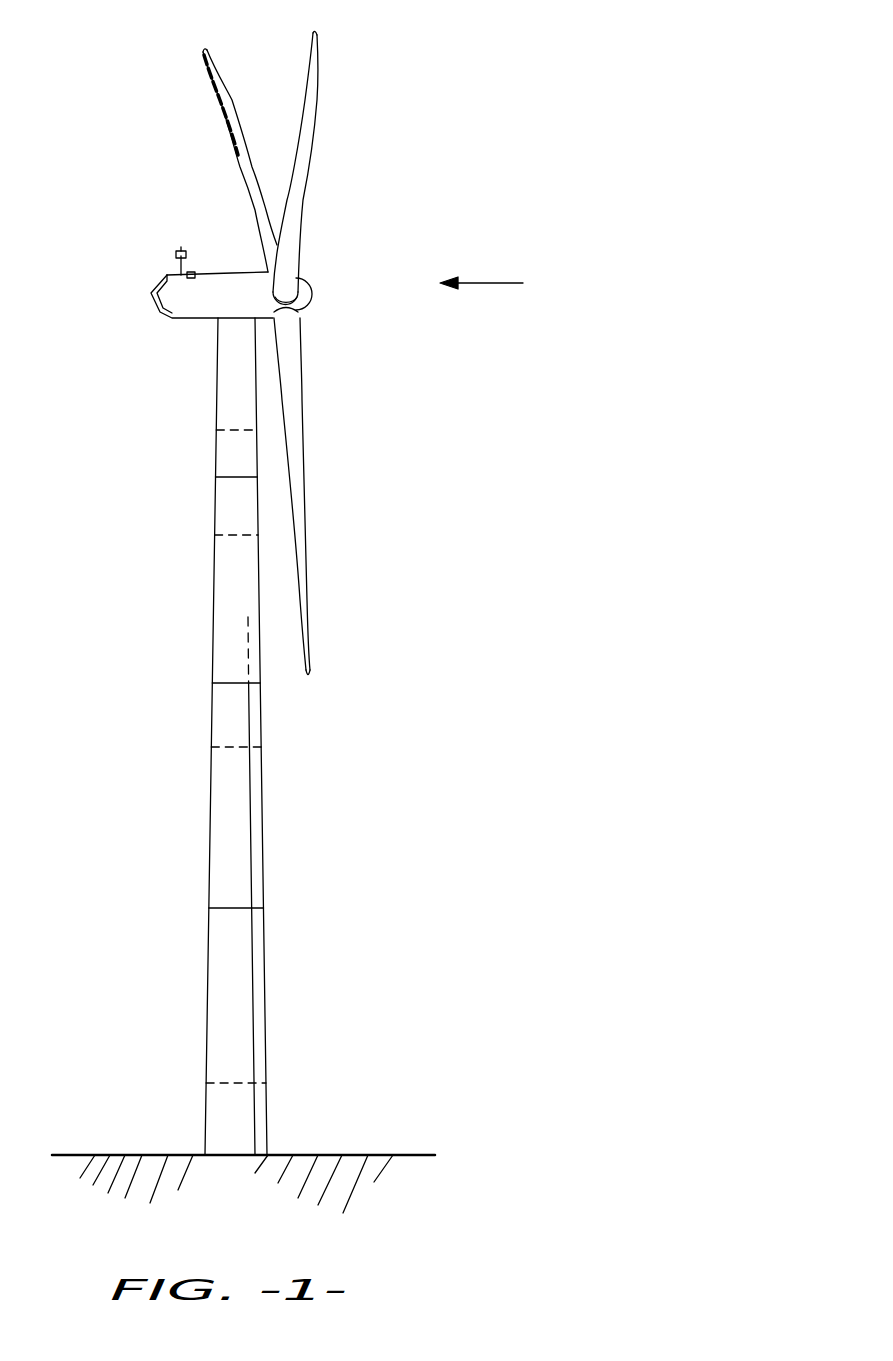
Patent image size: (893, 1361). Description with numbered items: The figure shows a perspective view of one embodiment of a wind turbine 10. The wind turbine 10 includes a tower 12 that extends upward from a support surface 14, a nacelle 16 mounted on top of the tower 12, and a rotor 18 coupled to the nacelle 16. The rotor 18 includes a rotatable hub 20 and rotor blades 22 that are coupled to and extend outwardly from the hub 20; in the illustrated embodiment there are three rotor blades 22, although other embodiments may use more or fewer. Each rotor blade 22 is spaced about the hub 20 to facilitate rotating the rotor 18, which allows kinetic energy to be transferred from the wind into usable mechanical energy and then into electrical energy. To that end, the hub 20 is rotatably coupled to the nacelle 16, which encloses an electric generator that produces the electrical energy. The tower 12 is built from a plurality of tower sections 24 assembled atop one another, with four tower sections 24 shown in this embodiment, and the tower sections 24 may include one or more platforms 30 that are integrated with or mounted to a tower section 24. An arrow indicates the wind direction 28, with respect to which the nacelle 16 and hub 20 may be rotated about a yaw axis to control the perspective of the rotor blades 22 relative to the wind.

The wind turbine 10 is at (410, 112).
The tower 12 is at (237, 736).
The support surface 14 is at (135, 1153).
The nacelle 16 is at (192, 321).
The rotor 18 is at (308, 343).
The rotatable hub 20 is at (311, 300).
The rotor blade 22 is at (305, 74).
The tower section 24 is at (237, 828).
The wind direction 28 is at (495, 283).
The platform 30 is at (232, 429).